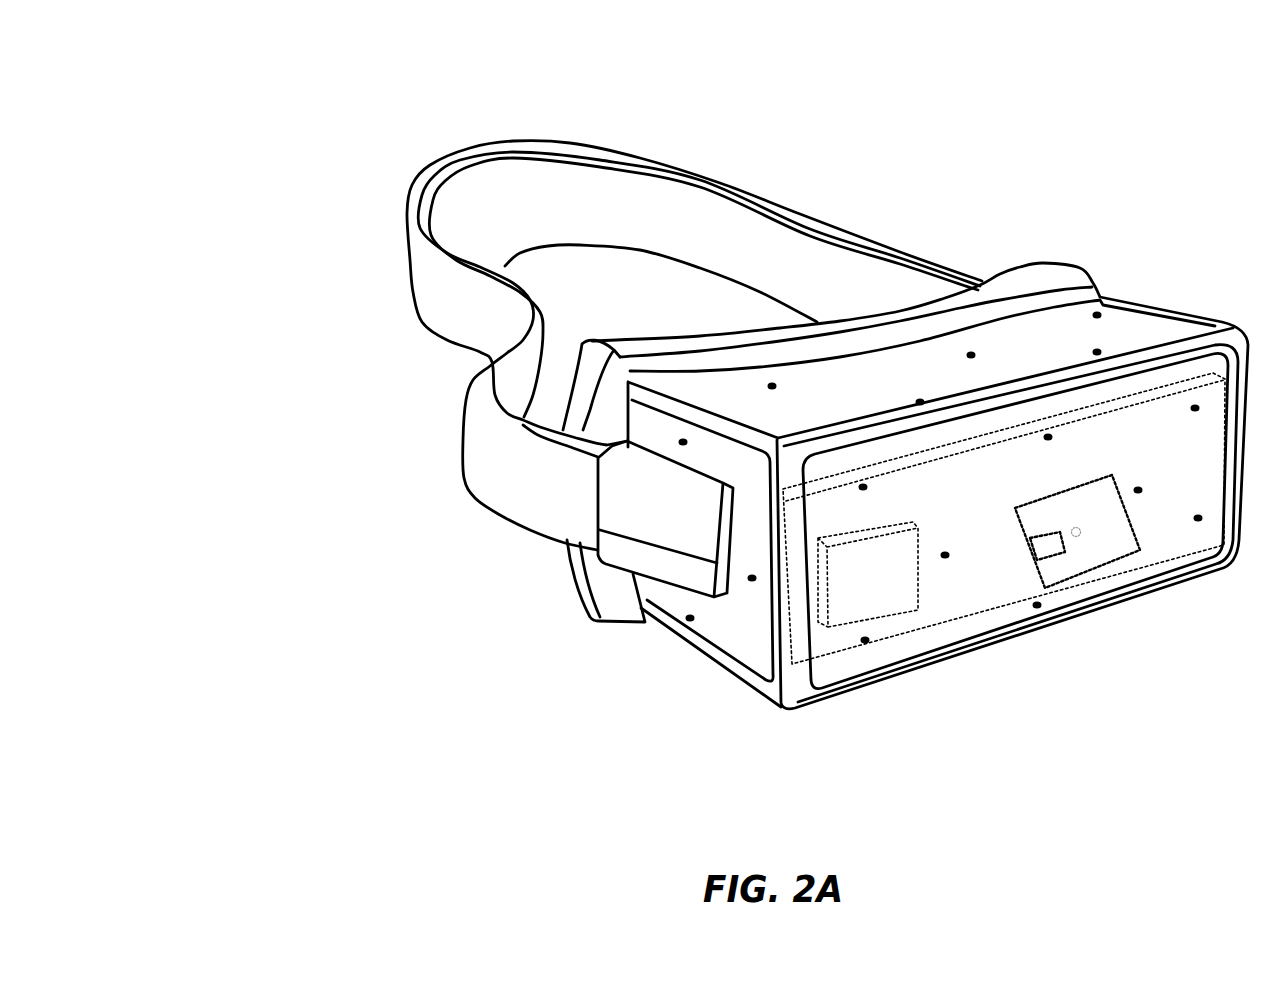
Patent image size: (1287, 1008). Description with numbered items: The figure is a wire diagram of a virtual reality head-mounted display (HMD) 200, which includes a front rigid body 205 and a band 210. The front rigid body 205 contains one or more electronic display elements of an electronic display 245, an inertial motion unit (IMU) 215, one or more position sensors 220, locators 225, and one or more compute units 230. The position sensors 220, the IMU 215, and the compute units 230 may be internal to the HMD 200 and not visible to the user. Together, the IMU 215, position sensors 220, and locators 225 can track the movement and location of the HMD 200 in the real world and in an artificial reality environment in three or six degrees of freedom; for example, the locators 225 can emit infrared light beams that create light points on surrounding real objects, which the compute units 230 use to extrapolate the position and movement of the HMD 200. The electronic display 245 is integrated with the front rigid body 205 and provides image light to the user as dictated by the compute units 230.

The virtual reality head-mounted display (HMD) 200 is at (272, 113).
The front rigid body 205 is at (802, 708).
The band 210 is at (410, 280).
The inertial motion unit (IMU) 215 is at (1015, 520).
The position sensors 220 is at (1046, 552).
The locators 225 is at (913, 403).
The compute units 230 is at (877, 525).
The electronic display 245 is at (1222, 462).